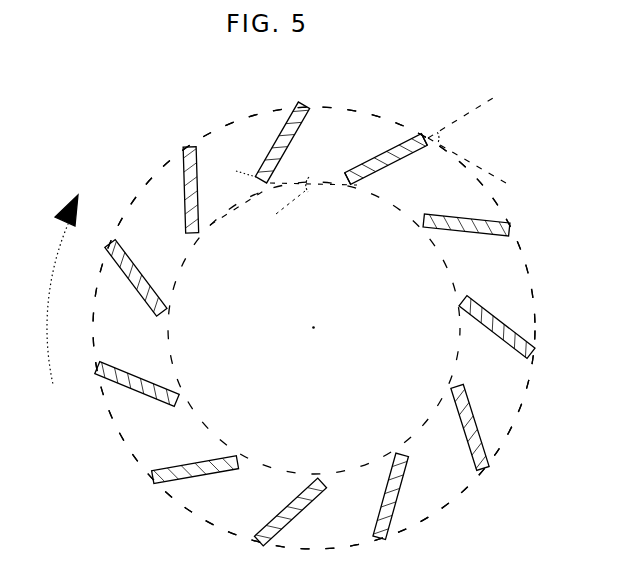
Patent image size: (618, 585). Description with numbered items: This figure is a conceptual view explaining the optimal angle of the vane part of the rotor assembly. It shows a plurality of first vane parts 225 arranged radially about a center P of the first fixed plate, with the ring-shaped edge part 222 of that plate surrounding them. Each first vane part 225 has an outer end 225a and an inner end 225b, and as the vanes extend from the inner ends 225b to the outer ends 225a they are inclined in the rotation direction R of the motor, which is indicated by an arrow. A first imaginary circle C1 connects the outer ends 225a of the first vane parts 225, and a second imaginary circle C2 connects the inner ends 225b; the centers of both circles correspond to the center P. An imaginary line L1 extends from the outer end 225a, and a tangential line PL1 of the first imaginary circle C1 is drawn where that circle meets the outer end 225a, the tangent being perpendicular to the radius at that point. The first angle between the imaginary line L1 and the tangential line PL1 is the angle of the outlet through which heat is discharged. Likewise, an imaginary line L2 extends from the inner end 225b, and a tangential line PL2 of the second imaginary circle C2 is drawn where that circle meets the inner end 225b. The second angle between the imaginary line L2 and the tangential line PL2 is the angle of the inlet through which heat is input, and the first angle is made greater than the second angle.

The edge part 222 is at (213, 503).
The first vane part 225 is at (402, 488).
The outer end 225a is at (411, 132).
The inner end 225b is at (355, 168).
The first imaginary circle C1 is at (527, 382).
The second imaginary circle C2 is at (459, 345).
The center P is at (314, 337).
The rotation direction R is at (52, 289).
The imaginary line L1 is at (468, 114).
The imaginary line L2 is at (257, 210).
The tangential line of the first imaginary circle PL1 is at (482, 167).
The tangential line of the second imaginary circle PL2 is at (282, 171).